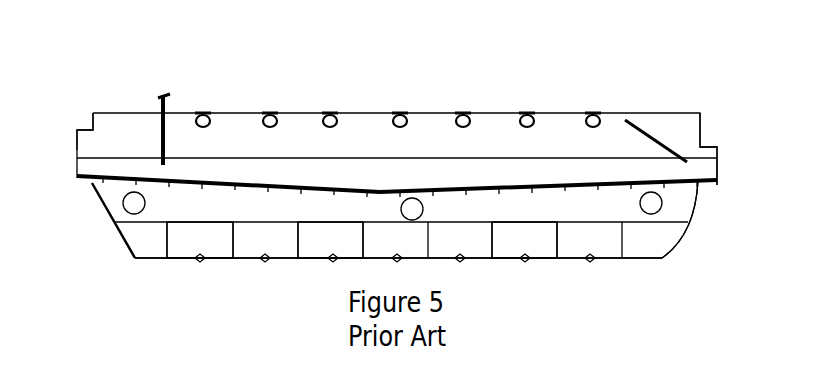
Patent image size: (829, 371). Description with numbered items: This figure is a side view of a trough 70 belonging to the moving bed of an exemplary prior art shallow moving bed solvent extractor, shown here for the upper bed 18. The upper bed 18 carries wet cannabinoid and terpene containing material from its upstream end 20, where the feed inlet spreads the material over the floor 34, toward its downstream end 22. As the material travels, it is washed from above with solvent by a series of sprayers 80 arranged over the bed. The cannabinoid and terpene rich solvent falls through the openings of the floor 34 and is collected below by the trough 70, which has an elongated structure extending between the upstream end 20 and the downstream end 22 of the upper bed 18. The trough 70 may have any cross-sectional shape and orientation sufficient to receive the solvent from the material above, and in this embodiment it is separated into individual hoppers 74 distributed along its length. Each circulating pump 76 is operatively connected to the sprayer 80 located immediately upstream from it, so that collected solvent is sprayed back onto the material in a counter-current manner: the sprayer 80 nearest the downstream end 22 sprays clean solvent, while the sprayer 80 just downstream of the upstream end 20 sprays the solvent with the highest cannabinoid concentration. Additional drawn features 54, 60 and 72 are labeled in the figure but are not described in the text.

The upper bed 18 is at (235, 62).
The upstream end 20 is at (78, 130).
The downstream end 22 is at (718, 147).
The floor 34 is at (287, 188).
The post 54 is at (160, 141).
The diagonal brace 60 is at (656, 138).
The trough 70 is at (670, 246).
The compartment 72 is at (556, 236).
The hoppers 74 is at (209, 246).
The circulating pump 76 is at (334, 258).
The sprayer 80 is at (337, 113).